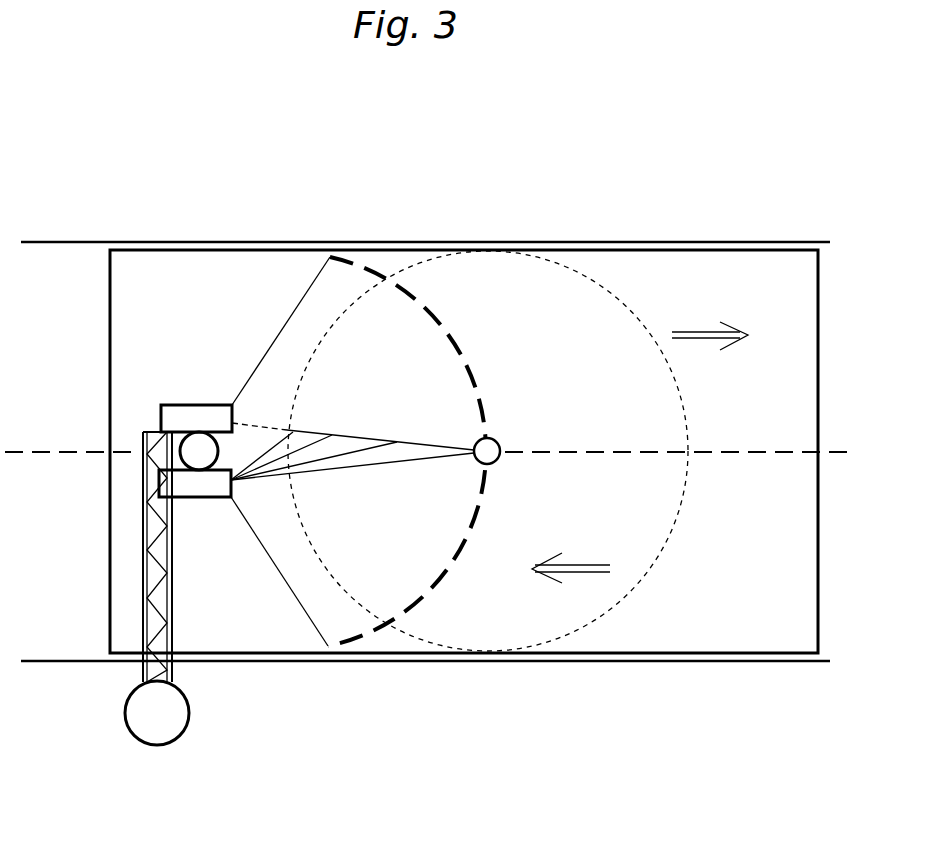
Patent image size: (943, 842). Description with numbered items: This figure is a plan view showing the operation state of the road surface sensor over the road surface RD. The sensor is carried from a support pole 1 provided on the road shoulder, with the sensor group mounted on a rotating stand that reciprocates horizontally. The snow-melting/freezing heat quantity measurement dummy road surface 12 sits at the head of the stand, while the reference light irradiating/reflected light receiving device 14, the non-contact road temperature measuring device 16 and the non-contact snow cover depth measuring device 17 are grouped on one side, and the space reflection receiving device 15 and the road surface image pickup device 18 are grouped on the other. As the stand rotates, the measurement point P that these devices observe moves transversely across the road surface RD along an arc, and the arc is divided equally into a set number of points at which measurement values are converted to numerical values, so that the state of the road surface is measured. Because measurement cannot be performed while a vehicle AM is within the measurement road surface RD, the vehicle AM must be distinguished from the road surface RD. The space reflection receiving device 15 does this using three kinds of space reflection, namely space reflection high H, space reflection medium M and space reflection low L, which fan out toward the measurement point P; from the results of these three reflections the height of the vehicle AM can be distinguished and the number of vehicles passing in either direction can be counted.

The support pole 1 is at (132, 708).
The snow-melting/freezing heat quantity measurement dummy road surface 12 is at (193, 443).
The reference light irradiating/reflected light receiving device 14 is at (219, 371).
The non-contact road temperature measuring device 16 is at (219, 371).
The non-contact snow cover depth measuring device 17 is at (210, 410).
The space reflection receiving device 15 is at (203, 513).
The road surface image pickup device 18 is at (202, 487).
The road surface RD is at (763, 267).
The measurement point P is at (455, 335).
The space reflection high H is at (303, 435).
The space reflection medium M is at (353, 438).
The space reflection low L is at (410, 446).
The vehicle AM is at (707, 340).